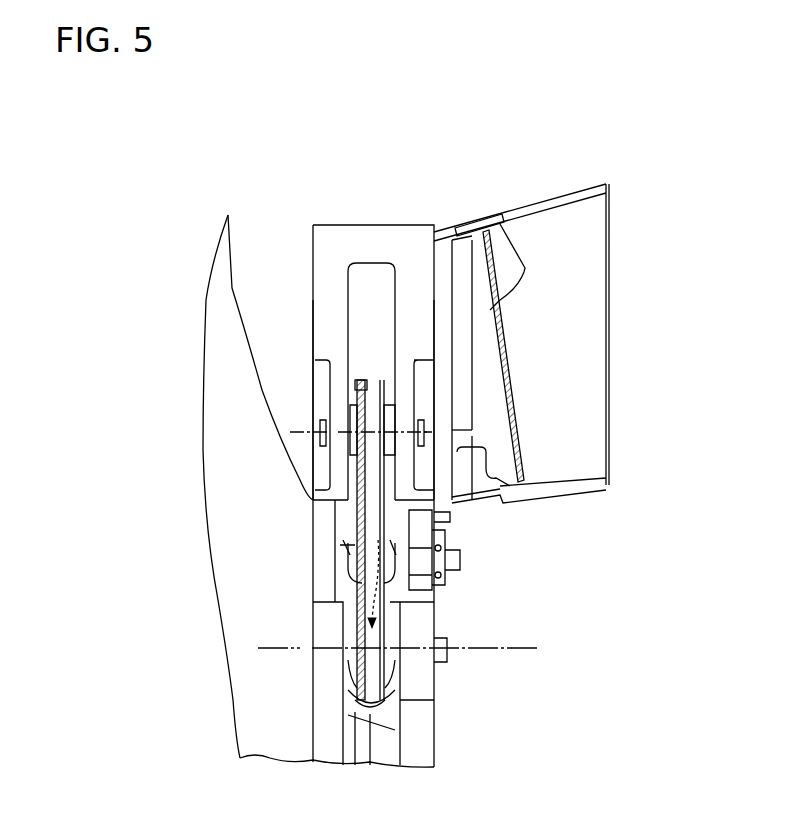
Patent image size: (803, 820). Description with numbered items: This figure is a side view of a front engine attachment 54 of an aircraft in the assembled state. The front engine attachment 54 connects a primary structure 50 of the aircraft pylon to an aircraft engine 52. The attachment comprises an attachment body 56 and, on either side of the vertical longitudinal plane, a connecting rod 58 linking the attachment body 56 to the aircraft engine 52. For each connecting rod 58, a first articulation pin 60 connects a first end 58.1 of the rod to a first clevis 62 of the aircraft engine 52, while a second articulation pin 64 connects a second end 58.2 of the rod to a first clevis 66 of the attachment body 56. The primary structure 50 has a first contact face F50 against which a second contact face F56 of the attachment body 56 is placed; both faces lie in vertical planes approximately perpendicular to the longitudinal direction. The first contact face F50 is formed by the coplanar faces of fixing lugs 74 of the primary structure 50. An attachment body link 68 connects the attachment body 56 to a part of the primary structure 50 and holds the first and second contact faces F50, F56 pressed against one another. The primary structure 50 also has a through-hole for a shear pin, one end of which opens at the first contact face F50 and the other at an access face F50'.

The primary structure 50 is at (570, 214).
The aircraft engine 52 is at (262, 690).
The front engine attachment 54 is at (362, 212).
The attachment body 56 is at (330, 232).
The connecting rod 58 is at (368, 510).
The first end 58.1 is at (452, 568).
The second end 58.2 is at (368, 380).
The first articulation pin 60 is at (450, 650).
The first clevis 62 is at (436, 742).
The second articulation pin 64 is at (322, 436).
The first clevis 66 is at (326, 386).
The attachment body link 68 is at (415, 228).
The fixing lug 74 is at (456, 380).
The first contact face F50 is at (346, 432).
The access face F50' is at (573, 452).
The second contact face F56 is at (467, 240).